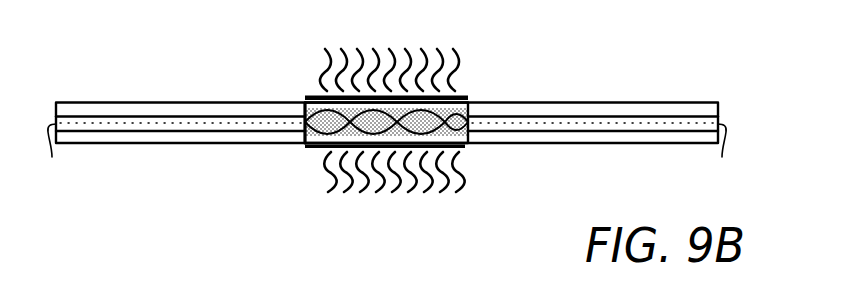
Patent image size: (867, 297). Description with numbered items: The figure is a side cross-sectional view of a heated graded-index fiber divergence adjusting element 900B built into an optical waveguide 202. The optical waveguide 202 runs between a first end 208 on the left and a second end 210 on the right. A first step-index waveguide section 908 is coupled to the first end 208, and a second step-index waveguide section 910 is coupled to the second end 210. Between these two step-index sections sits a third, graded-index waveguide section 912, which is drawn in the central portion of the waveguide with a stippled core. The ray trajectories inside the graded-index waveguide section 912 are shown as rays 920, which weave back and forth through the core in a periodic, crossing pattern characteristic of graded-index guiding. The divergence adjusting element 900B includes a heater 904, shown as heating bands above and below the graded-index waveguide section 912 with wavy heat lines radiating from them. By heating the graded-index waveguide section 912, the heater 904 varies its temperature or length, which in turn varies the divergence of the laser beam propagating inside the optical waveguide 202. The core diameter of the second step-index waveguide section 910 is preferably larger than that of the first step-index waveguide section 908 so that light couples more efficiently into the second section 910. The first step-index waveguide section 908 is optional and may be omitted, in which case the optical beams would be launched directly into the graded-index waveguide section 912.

The optical waveguide 202 is at (172, 60).
The first end 208 is at (50, 155).
The second end 210 is at (713, 155).
The first step-index waveguide section 908 is at (178, 144).
The second step-index waveguide section 910 is at (548, 144).
The graded-index waveguide section 912 is at (303, 143).
The rays 920 is at (306, 108).
The heater 904 is at (315, 101).
The divergence adjusting element 900B is at (481, 25).